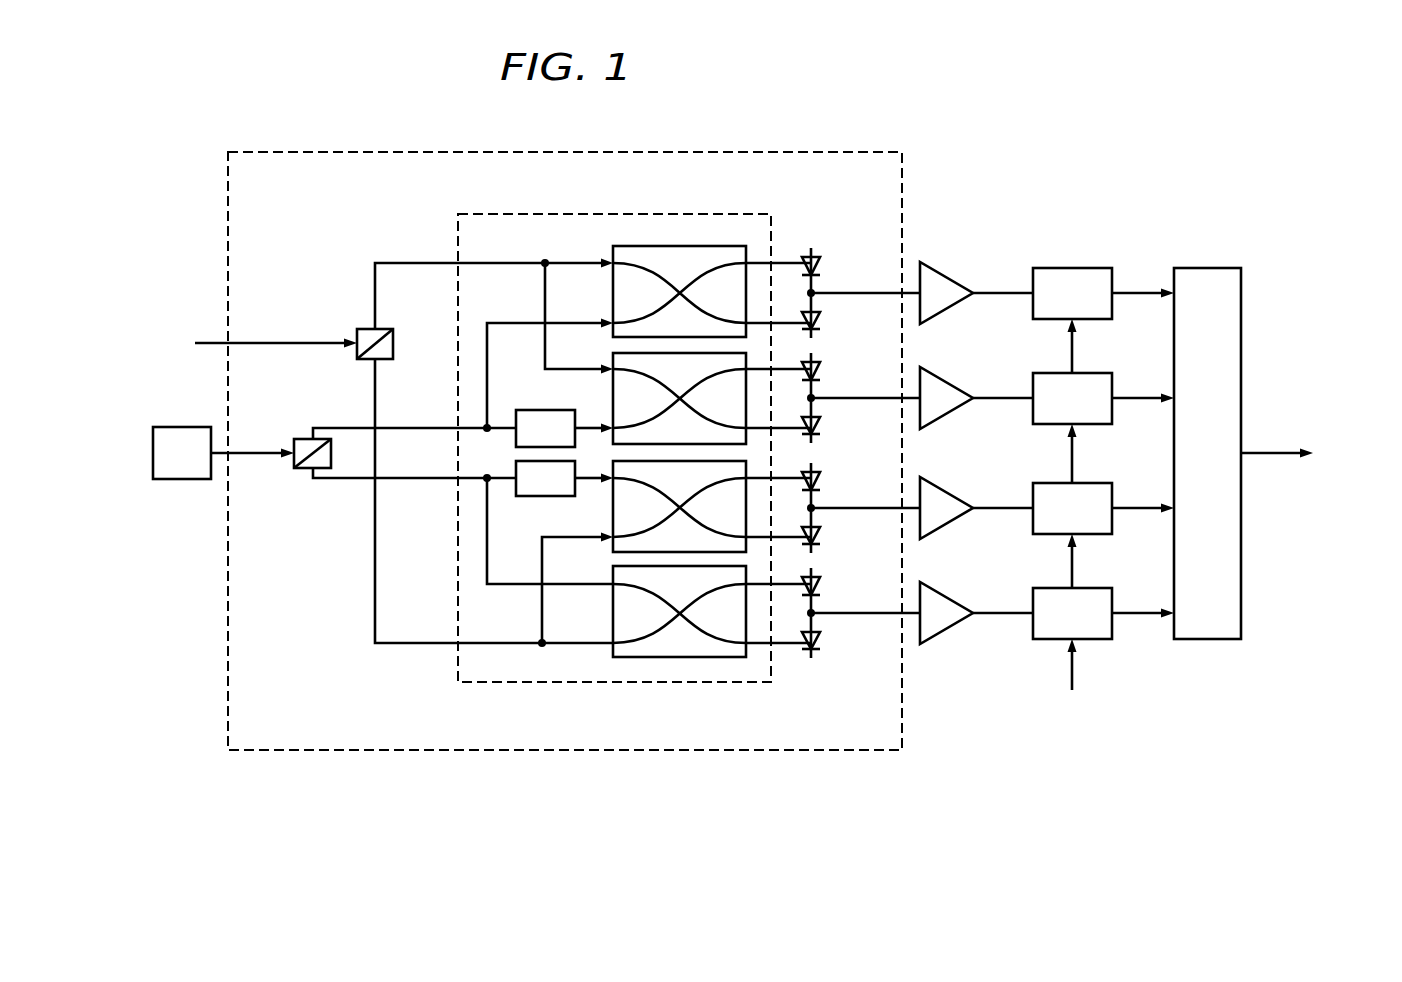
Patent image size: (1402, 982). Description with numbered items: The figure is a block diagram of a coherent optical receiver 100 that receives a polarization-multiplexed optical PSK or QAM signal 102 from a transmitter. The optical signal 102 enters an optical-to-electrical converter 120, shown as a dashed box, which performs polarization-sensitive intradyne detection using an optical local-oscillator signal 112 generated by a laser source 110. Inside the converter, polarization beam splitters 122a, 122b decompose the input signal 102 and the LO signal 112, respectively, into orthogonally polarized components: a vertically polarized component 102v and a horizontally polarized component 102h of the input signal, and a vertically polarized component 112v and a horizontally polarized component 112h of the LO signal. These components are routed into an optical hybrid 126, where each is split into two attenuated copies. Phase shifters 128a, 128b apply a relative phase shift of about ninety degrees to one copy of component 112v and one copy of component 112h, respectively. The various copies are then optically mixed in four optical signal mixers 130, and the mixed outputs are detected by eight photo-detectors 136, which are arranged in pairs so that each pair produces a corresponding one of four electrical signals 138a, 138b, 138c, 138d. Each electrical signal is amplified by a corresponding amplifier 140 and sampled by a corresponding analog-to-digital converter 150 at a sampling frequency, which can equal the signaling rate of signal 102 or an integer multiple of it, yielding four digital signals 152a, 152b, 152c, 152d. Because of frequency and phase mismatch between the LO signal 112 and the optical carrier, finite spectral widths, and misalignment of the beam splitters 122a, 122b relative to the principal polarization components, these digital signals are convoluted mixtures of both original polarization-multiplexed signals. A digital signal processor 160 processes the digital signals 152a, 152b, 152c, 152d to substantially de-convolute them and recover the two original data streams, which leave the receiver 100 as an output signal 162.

The coherent optical receiver 100 is at (578, 121).
The optical signal 102 is at (258, 340).
The vertically polarized component 102v is at (376, 297).
The horizontally polarized component 102h is at (376, 395).
The laser source 110 is at (175, 428).
The optical local-oscillator signal 112 is at (253, 460).
The vertically polarized component 112v is at (445, 429).
The horizontally polarized component 112h is at (410, 480).
The optical-to-electrical converter 120 is at (298, 152).
The polarization beam splitter 122a is at (357, 359).
The polarization beam splitter 122b is at (300, 470).
The optical hybrid 126 is at (593, 214).
The phase shifter 128a is at (535, 410).
The phase shifter 128b is at (536, 497).
The optical signal mixer 130 is at (663, 272).
The photo-detector 136 is at (810, 224).
The electrical signal 138a is at (855, 290).
The electrical signal 138b is at (855, 395).
The electrical signal 138c is at (855, 505).
The electrical signal 138d is at (855, 610).
The amplifier 140 is at (938, 272).
The analog-to-digital converter 150 is at (1056, 320).
The digital signal 152a is at (1142, 290).
The digital signal 152b is at (1142, 395).
The digital signal 152c is at (1142, 505).
The digital signal 152d is at (1142, 610).
The digital signal processor 160 is at (1198, 268).
The output signal 162 is at (1270, 447).